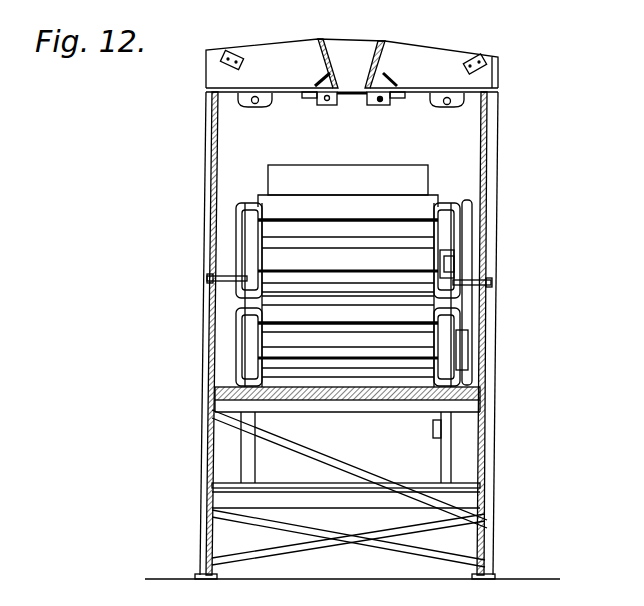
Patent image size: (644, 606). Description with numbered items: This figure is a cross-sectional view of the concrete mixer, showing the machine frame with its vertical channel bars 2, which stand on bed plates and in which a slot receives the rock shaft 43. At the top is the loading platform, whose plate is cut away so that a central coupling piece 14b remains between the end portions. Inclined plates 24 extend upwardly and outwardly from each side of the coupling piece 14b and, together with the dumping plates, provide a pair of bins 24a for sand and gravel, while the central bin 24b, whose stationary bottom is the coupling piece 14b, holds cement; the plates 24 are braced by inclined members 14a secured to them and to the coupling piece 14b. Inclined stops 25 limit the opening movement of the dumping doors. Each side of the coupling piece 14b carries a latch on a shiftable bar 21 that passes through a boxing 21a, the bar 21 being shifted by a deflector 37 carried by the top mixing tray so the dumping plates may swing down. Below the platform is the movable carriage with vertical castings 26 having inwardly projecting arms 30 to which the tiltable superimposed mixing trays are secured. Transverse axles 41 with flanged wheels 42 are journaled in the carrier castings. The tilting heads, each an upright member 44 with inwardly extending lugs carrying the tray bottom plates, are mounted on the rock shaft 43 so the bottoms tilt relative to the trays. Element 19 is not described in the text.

The channel bar 2 is at (208, 460).
The guide rail portion 14a is at (327, 88).
The coupling piece 14b is at (360, 97).
The bracket 19 is at (250, 100).
The shiftable bar 21 is at (393, 105).
The boxing 21a is at (327, 106).
The inclined plate 24 is at (383, 52).
The bin 24a is at (353, 65).
The bin 24b is at (351, 63).
The inclined stop 25 is at (498, 62).
The vertical casting 26 is at (245, 315).
The inwardly projecting arm 30 is at (245, 208).
The deflector 37 is at (424, 178).
The transverse axle 41 is at (236, 298).
The flanged wheel 42 is at (462, 345).
The rock shaft 43 is at (492, 283).
The upright member 44 is at (450, 264).